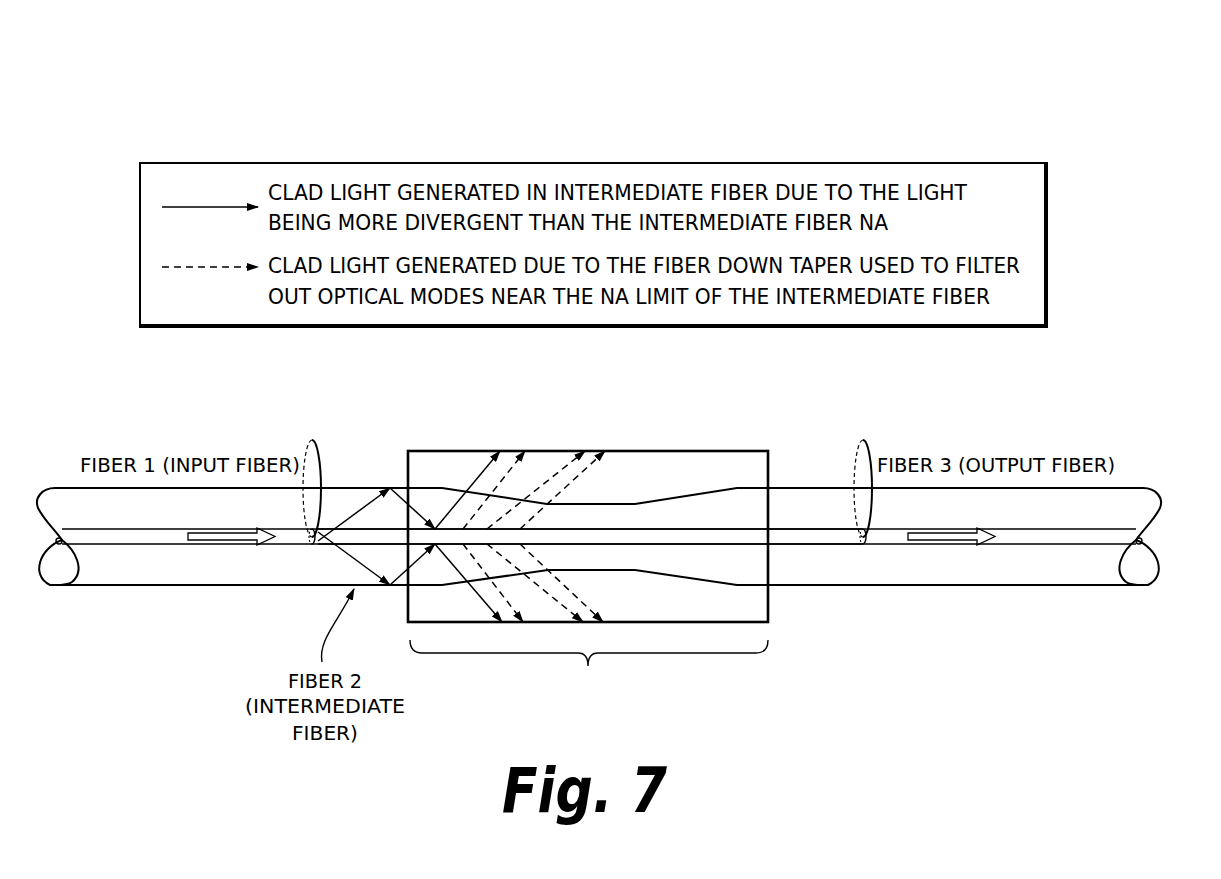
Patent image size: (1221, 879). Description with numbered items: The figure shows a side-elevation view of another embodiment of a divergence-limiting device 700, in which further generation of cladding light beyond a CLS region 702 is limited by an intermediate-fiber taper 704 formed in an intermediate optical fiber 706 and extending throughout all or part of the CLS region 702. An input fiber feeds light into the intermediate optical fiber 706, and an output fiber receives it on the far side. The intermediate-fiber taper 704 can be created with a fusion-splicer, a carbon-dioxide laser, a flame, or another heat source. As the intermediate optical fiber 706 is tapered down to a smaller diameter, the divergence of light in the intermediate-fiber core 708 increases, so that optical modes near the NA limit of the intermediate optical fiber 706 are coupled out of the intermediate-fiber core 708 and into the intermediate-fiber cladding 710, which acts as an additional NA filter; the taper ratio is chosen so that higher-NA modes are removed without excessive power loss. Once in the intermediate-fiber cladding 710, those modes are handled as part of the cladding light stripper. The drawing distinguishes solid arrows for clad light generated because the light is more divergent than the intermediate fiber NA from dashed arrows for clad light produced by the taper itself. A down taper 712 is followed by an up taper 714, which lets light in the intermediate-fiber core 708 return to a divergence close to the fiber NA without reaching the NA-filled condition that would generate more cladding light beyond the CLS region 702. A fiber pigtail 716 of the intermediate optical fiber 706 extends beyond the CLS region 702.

The divergence-limiting device 700 is at (1109, 108).
The CLS region 702 is at (602, 725).
The intermediate-fiber taper 704 is at (618, 492).
The intermediate optical fiber 706 is at (352, 487).
The intermediate-fiber core 708 is at (402, 537).
The intermediate-fiber cladding 710 is at (445, 500).
The down taper 712 is at (514, 500).
The up taper 714 is at (692, 493).
The fiber pigtail 716 is at (812, 512).